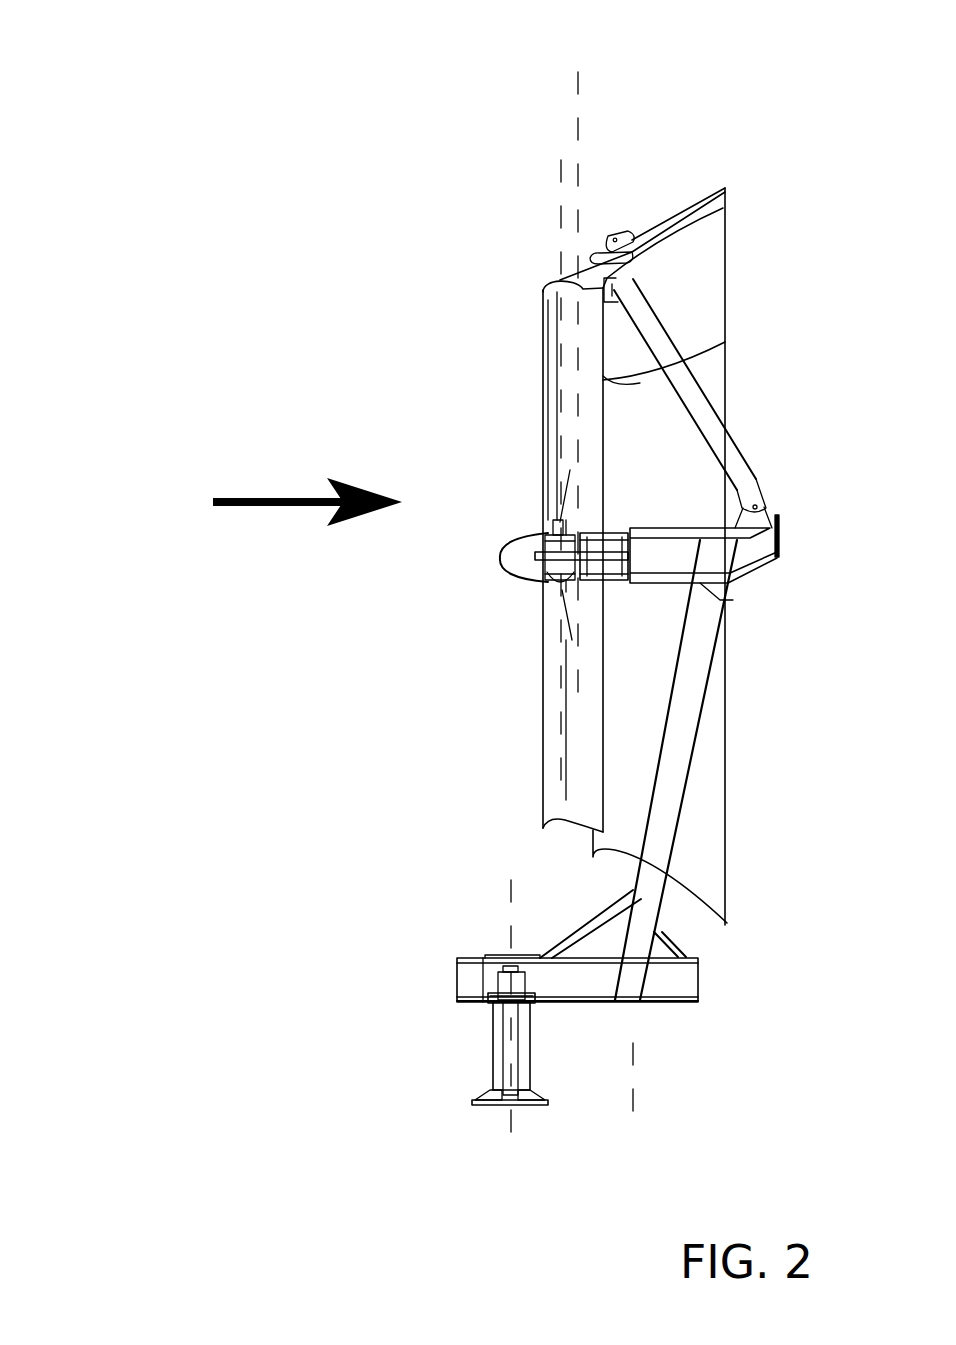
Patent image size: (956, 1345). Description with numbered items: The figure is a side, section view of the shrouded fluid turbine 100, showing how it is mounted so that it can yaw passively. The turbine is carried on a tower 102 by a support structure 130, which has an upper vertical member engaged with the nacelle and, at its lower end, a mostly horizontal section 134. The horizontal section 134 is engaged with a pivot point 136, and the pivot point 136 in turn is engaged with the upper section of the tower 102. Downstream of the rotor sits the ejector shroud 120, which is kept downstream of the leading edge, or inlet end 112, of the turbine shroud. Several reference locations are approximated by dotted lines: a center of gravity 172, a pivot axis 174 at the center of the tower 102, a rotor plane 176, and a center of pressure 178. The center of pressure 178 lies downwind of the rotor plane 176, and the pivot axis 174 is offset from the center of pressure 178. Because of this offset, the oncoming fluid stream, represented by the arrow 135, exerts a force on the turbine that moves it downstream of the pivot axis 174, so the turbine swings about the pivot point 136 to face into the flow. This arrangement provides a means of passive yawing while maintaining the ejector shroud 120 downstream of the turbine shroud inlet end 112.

The shrouded fluid turbine 100 is at (122, 51).
The tower 102 is at (497, 1047).
The inlet end 112 is at (543, 285).
The ejector shroud 120 is at (712, 798).
The support structure 130 is at (400, 970).
The horizontal section 134 is at (558, 987).
The arrow 135 is at (236, 500).
The pivot point 136 is at (470, 987).
The center of gravity 172 is at (633, 1050).
The pivot axis 174 is at (508, 887).
The rotor plane 176 is at (562, 172).
The center of pressure 178 is at (580, 80).